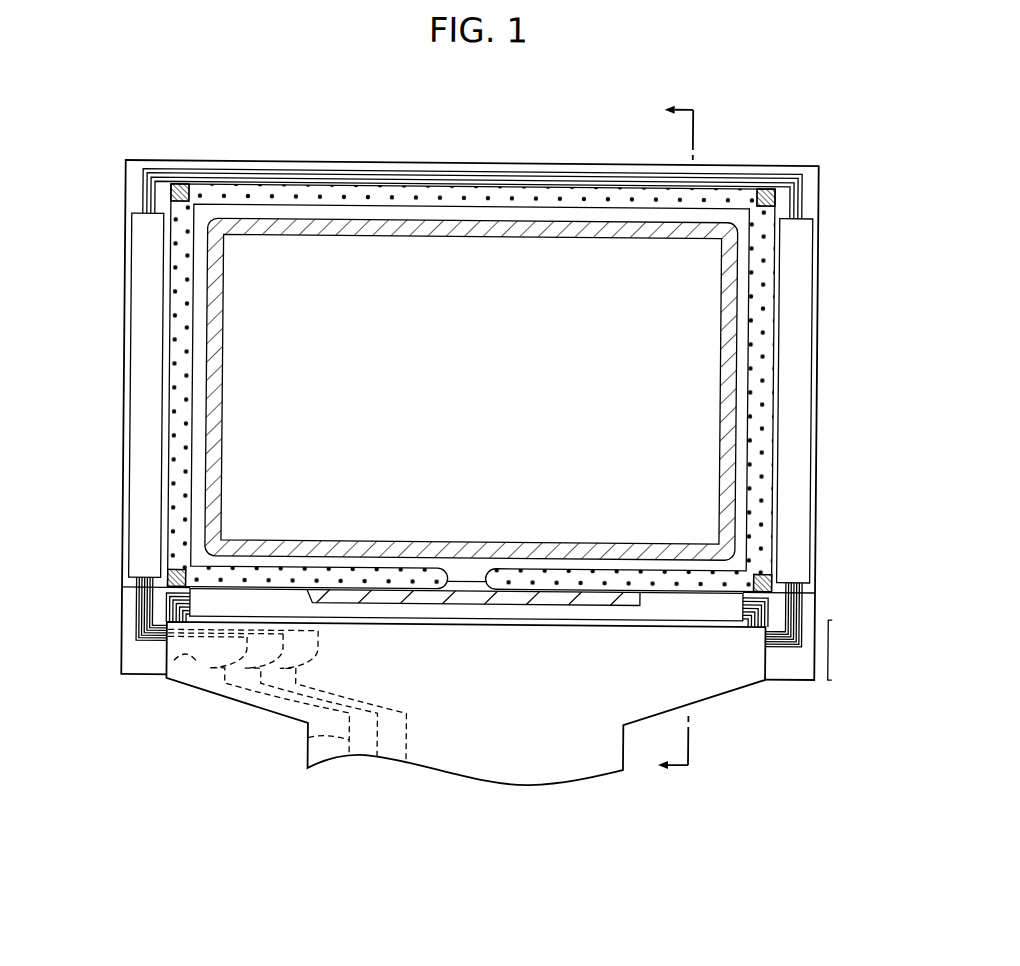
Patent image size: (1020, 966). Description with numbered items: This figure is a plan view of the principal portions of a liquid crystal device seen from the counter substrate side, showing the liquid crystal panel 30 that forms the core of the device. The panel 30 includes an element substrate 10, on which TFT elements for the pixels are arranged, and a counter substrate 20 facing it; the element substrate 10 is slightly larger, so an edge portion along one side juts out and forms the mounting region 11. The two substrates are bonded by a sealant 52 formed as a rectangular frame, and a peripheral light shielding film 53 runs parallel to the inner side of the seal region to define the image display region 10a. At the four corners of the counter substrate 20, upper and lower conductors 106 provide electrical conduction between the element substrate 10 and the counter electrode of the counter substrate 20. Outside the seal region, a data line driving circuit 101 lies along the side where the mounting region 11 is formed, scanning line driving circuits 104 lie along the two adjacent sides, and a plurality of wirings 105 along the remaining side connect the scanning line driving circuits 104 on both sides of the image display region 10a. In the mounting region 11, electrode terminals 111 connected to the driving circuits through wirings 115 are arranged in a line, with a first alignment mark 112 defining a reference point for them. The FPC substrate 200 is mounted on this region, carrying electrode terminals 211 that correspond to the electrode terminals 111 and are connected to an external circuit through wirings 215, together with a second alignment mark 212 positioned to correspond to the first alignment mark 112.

The element substrate 10 is at (253, 162).
The image display region 10a is at (294, 330).
The mounting region 11 is at (848, 650).
The counter substrate 20 is at (368, 186).
The liquid crystal panel 30 is at (570, 139).
The sealant 52 is at (759, 342).
The peripheral light shielding film 53 is at (734, 268).
The data line driving circuit 101 is at (207, 607).
The scanning line driving circuits 104 is at (140, 388).
The wirings 105 is at (423, 170).
The upper and lower conductors 106 is at (178, 188).
The electrode terminals 111 is at (222, 660).
The electrode terminals 211 is at (243, 633).
The first alignment mark 112 is at (186, 658).
The second alignment mark 212 is at (290, 696).
The wirings 115 is at (137, 640).
The FPC substrate 200 is at (452, 758).
The wirings 215 is at (309, 741).